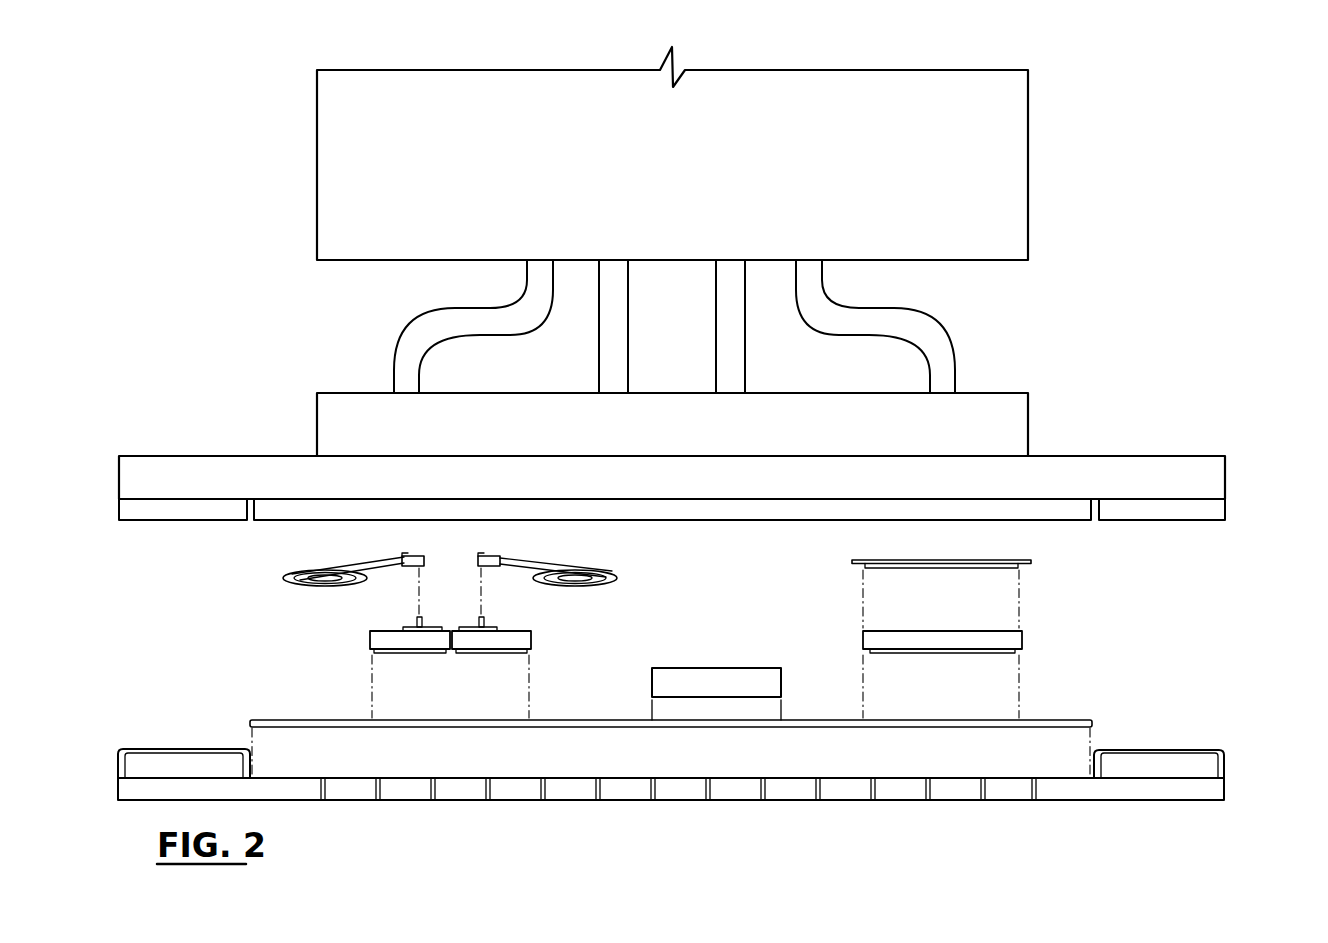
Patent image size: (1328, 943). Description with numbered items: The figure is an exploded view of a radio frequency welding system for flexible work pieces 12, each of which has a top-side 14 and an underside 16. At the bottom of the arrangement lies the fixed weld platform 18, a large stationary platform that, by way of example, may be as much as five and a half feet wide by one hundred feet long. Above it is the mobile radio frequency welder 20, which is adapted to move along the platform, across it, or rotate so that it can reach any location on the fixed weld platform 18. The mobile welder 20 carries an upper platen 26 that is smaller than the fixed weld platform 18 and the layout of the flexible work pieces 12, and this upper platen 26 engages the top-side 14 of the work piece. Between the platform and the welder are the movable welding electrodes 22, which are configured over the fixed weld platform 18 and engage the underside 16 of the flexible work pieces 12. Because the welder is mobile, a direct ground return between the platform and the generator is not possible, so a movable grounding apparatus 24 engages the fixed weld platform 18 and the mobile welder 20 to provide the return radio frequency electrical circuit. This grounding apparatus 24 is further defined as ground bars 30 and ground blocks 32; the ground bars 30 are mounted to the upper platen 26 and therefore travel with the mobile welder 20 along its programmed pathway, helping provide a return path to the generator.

The flexible work pieces 12 is at (286, 573).
The top-side 14 is at (528, 562).
The underside 16 is at (514, 566).
The fixed weld platform 18 is at (1207, 793).
The mobile radio frequency welder 20 is at (1055, 512).
The movable welding electrodes 22 is at (372, 632).
The movable grounding apparatus 24 is at (742, 668).
The upper platen 26 is at (1047, 468).
The ground bars 30 is at (1163, 510).
The ground blocks 32 is at (1160, 750).